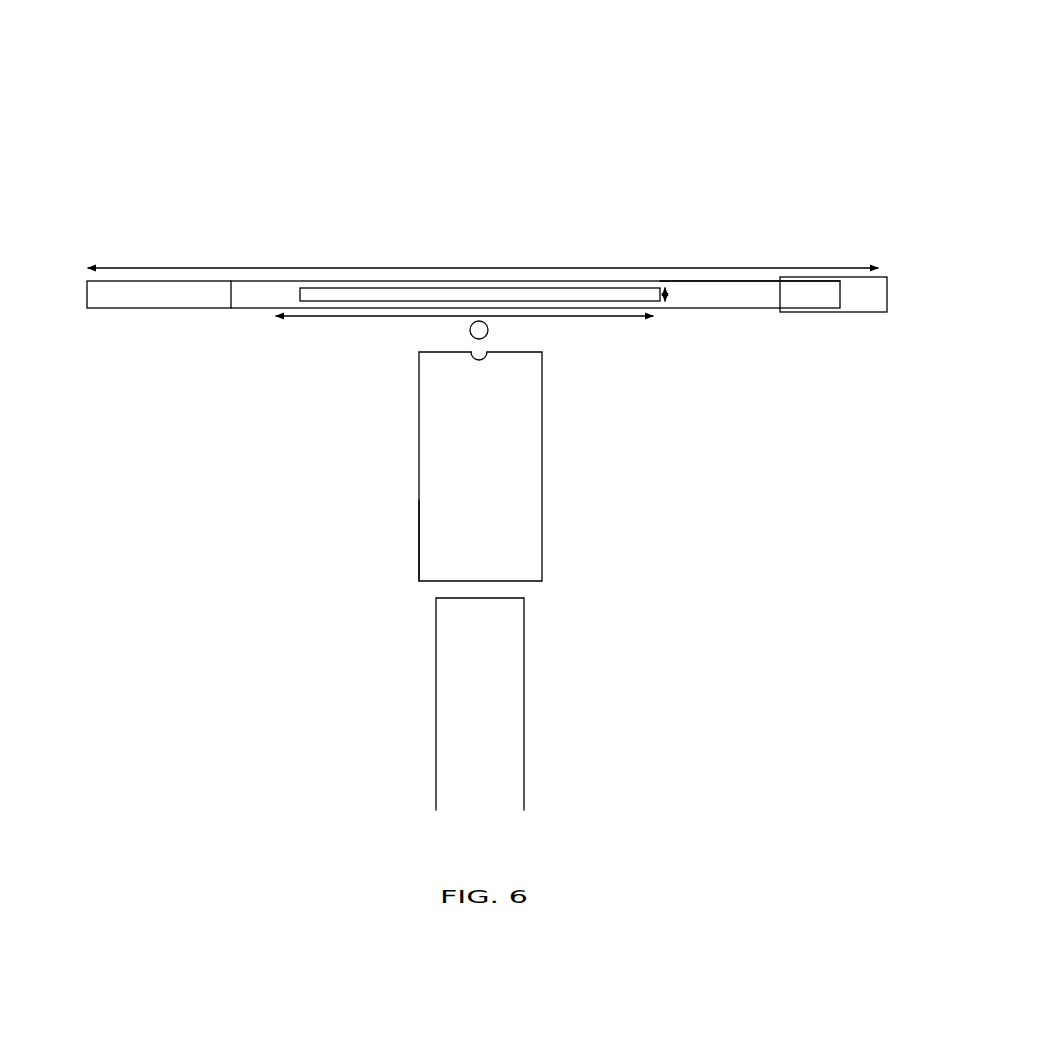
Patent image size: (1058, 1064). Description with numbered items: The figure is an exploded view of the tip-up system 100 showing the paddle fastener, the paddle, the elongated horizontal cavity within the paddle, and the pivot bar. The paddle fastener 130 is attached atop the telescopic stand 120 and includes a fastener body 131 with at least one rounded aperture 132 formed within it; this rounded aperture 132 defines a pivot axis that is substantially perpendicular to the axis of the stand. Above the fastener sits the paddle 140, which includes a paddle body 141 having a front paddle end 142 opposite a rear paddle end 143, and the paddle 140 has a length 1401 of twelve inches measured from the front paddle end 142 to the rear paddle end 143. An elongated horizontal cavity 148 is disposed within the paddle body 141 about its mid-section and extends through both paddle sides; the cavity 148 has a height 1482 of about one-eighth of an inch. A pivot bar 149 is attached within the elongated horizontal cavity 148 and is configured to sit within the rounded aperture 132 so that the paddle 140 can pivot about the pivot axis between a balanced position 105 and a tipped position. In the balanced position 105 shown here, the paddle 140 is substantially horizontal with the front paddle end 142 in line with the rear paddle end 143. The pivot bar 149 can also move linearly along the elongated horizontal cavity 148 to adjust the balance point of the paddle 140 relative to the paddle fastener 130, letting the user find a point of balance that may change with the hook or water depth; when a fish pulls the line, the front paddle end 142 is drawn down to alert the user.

The tip-up system 100 is at (703, 80).
The balanced position 105 is at (708, 125).
The paddle 140 is at (290, 245).
The length 1401 is at (498, 268).
The rear paddle end 143 is at (114, 300).
The elongated horizontal cavity 148 is at (303, 293).
The height 1482 is at (672, 297).
The paddle body 141 is at (693, 296).
The front paddle end 142 is at (860, 298).
The pivot bar 149 is at (479, 330).
The paddle fastener 130 is at (535, 547).
The rounded aperture 132 is at (479, 355).
The fastener body 131 is at (442, 534).
The telescopic stand 120 is at (458, 686).